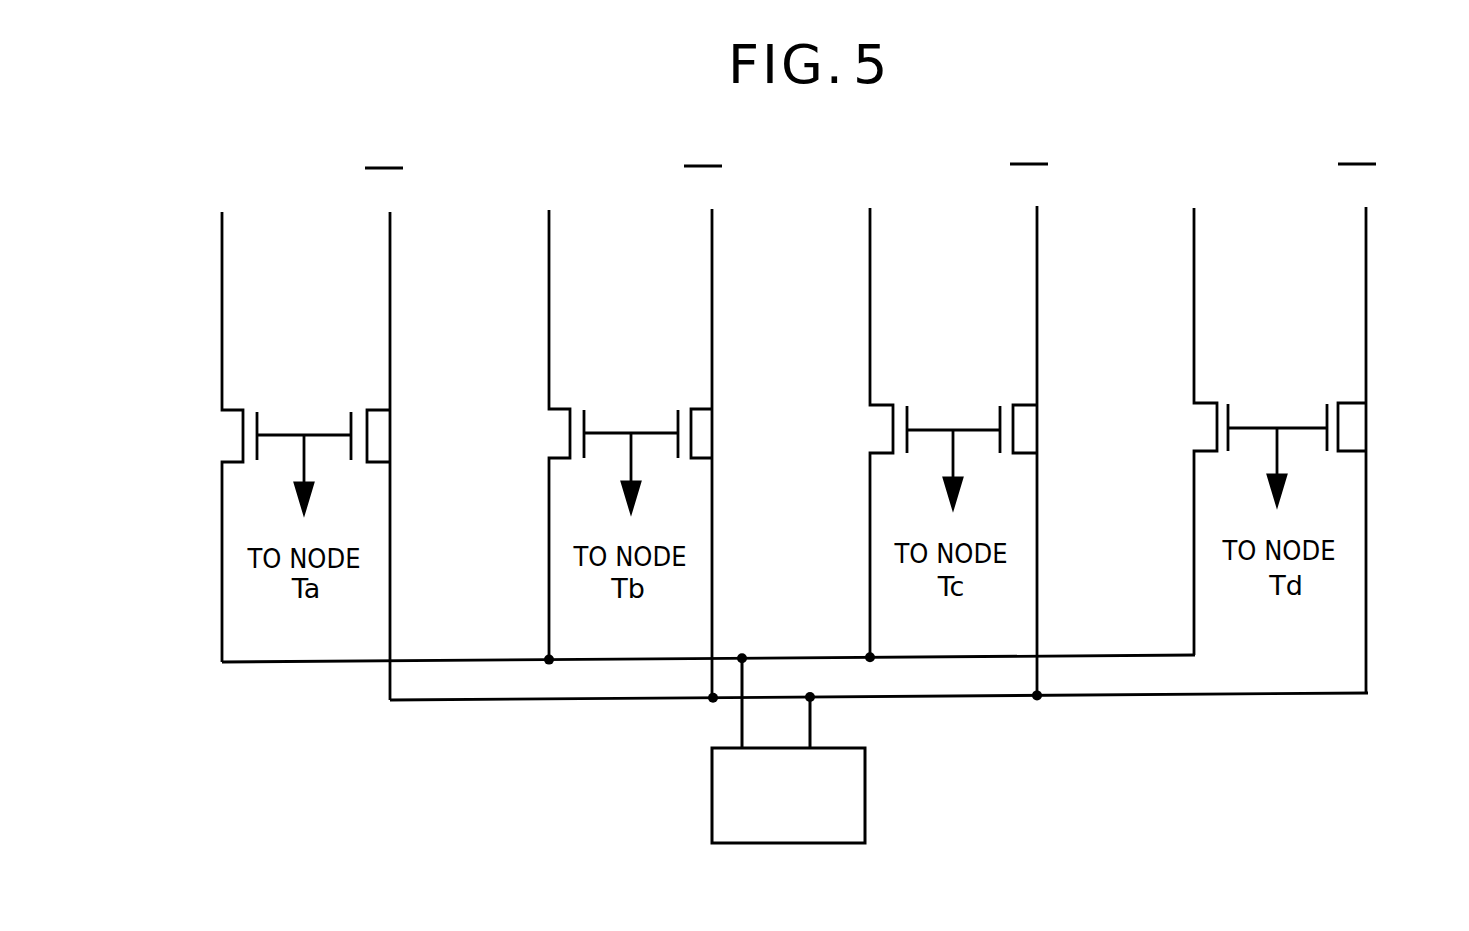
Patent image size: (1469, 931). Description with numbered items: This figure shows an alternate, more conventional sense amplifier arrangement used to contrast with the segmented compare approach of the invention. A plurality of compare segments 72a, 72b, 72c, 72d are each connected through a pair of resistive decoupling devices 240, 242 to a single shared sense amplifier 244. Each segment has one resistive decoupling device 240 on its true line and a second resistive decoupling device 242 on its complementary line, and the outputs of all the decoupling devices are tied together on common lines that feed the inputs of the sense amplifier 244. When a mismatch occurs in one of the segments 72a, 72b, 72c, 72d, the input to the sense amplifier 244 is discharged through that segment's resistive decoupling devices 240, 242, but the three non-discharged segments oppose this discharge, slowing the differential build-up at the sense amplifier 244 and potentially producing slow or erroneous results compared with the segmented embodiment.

The compare segment 72a is at (390, 288).
The compare segment 72b is at (712, 292).
The compare segment 72c is at (1037, 285).
The compare segment 72d is at (1366, 290).
The resistive decoupling device 240 is at (243, 437).
The resistive decoupling device 242 is at (367, 433).
The sense amplifier 244 is at (866, 818).